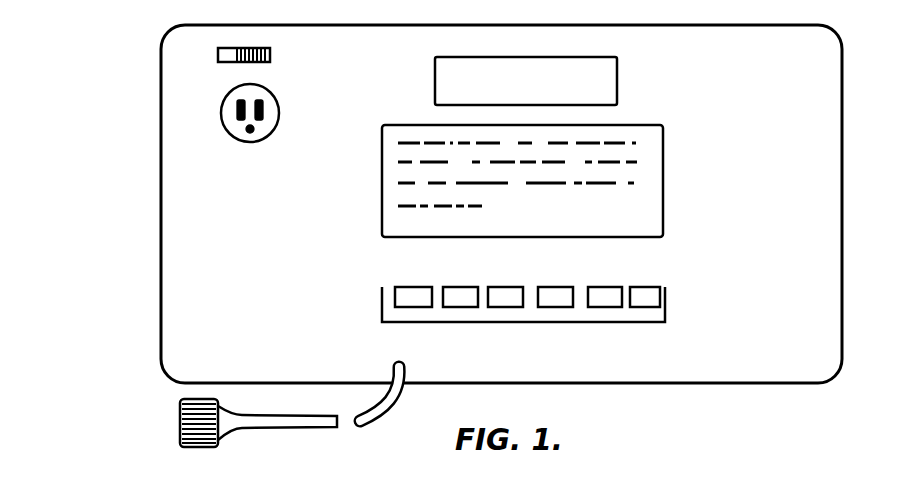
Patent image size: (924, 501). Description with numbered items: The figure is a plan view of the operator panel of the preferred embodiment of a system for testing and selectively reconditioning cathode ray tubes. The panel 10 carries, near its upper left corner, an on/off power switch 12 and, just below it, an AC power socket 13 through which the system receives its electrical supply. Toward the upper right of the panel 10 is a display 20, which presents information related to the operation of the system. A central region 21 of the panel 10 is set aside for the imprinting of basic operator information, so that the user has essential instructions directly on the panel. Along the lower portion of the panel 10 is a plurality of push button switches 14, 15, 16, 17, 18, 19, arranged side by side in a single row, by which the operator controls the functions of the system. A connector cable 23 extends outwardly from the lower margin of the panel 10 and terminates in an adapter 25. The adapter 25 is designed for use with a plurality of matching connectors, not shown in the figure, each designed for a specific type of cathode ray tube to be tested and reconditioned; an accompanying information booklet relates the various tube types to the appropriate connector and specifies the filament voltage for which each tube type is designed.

The panel 10 is at (846, 78).
The on/off power switch 12 is at (237, 63).
The AC power socket 13 is at (221, 111).
The push button switch 14 is at (400, 298).
The push button switch 15 is at (460, 299).
The push button switch 16 is at (503, 299).
The push button switch 17 is at (553, 299).
The push button switch 18 is at (607, 299).
The push button switch 19 is at (648, 297).
The display 20 is at (612, 77).
The central region 21 is at (663, 153).
The connector cable 23 is at (396, 398).
The adapter 25 is at (180, 410).